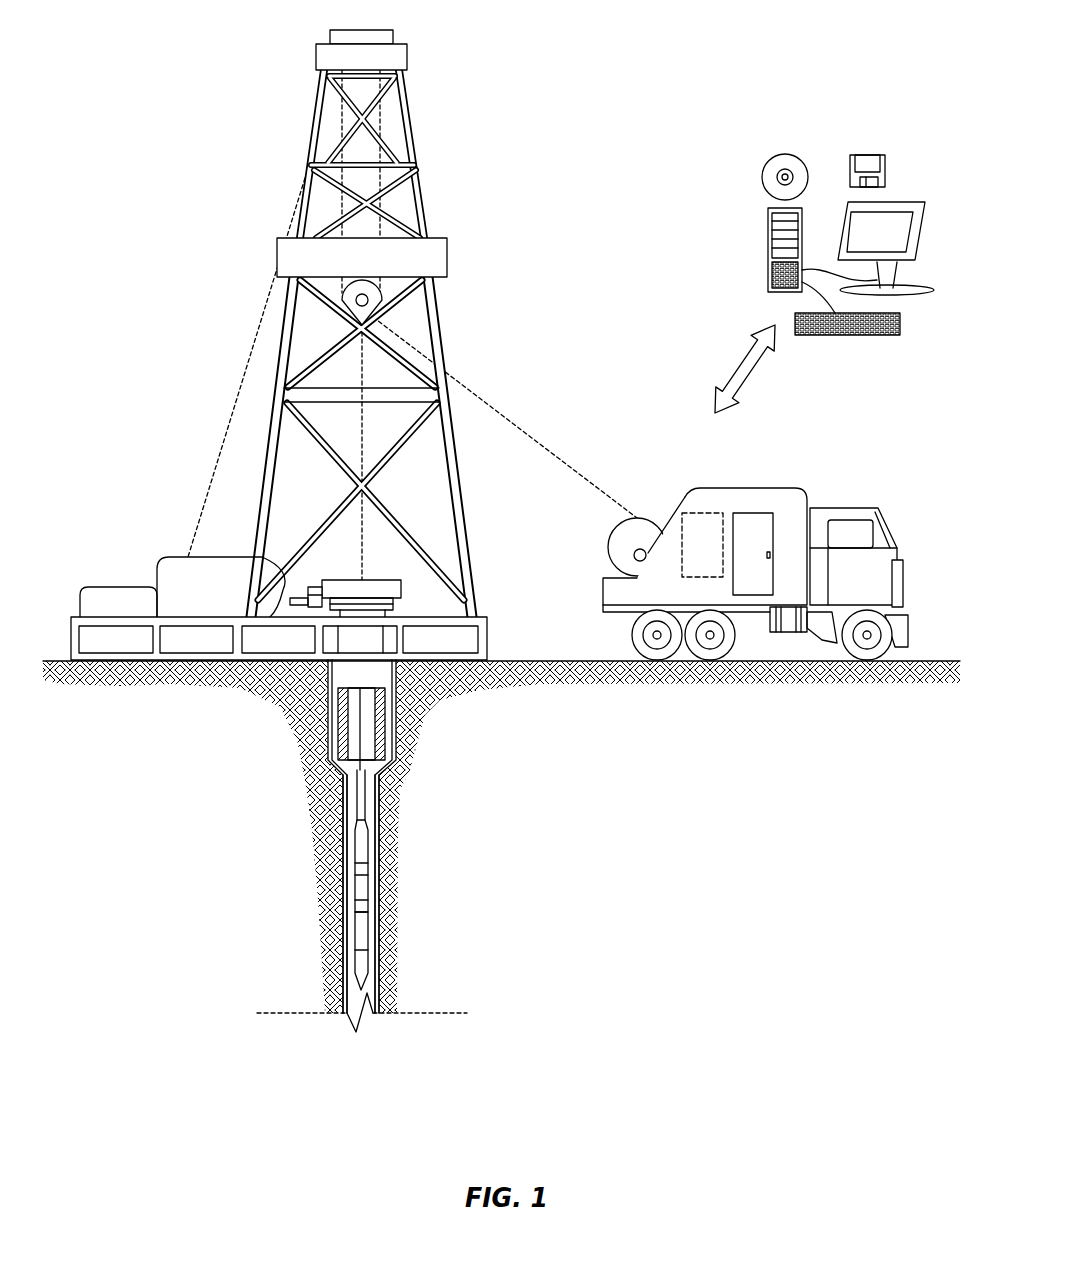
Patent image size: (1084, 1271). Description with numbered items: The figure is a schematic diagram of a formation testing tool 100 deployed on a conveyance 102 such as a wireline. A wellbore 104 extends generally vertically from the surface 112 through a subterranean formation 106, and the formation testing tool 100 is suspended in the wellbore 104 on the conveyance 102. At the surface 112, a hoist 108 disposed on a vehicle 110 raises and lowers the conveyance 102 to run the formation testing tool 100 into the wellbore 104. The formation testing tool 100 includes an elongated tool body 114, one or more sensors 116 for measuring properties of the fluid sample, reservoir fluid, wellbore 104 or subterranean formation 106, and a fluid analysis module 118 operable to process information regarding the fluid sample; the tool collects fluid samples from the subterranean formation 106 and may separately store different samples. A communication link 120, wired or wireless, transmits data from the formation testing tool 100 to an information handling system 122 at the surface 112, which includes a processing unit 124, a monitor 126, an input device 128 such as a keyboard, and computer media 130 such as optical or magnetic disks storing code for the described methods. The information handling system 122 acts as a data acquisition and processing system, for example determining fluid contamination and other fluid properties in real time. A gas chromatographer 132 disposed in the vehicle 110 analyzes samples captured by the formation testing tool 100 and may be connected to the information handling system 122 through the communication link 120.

The formation testing tool 100 is at (380, 907).
The conveyance 102 is at (357, 784).
The wellbore 104 is at (340, 842).
The subterranean formation 106 is at (567, 847).
The hoist 108 is at (610, 545).
The vehicle 110 is at (720, 549).
The surface 112 is at (915, 660).
The tool body 114 is at (355, 922).
The sensors 116 is at (368, 940).
The fluid analysis module 118 is at (343, 927).
The communication link 120 is at (752, 372).
The information handling system 122 is at (703, 140).
The processing unit 124 is at (768, 225).
The monitor 126 is at (901, 201).
The input device 128 is at (888, 336).
The computer media 130 is at (866, 152).
The gas chromatographer 132 is at (702, 512).